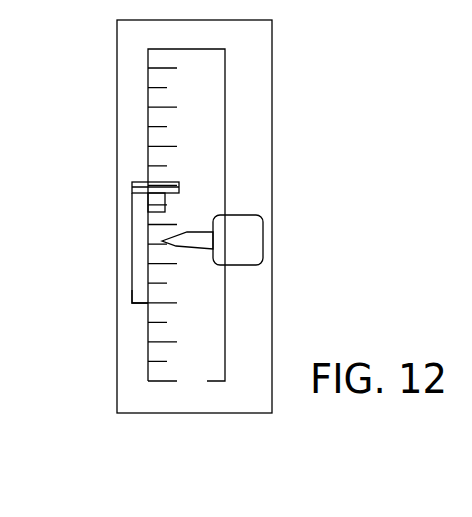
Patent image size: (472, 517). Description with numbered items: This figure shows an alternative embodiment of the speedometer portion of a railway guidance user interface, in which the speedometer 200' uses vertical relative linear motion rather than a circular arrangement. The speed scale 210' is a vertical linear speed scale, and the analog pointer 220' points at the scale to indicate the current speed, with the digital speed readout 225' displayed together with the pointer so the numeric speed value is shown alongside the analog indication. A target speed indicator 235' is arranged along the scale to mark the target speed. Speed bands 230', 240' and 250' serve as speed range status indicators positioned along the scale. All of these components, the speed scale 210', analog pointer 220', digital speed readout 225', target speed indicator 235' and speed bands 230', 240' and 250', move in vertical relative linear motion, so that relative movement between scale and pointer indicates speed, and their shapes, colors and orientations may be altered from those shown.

The speedometer 200' is at (222, 256).
The speed scale 210' is at (156, 256).
The analog pointer 220' is at (302, 240).
The digital speed readout 225' is at (247, 174).
The speed band 230' is at (89, 277).
The target speed indicator 235' is at (104, 355).
The speed band 240' is at (97, 234).
The speed band 250' is at (104, 140).